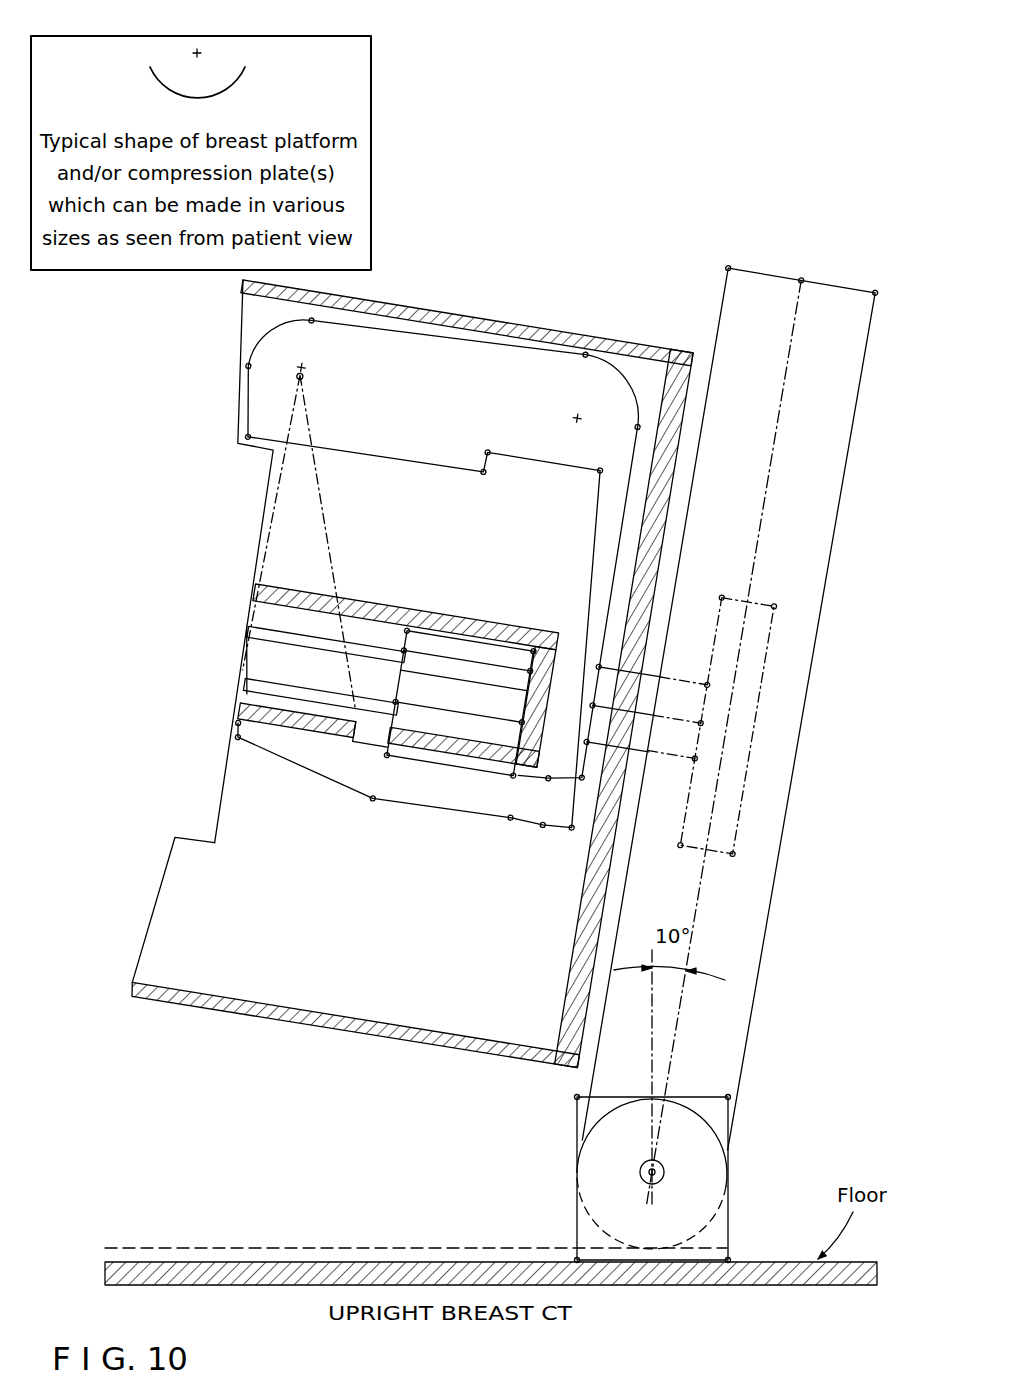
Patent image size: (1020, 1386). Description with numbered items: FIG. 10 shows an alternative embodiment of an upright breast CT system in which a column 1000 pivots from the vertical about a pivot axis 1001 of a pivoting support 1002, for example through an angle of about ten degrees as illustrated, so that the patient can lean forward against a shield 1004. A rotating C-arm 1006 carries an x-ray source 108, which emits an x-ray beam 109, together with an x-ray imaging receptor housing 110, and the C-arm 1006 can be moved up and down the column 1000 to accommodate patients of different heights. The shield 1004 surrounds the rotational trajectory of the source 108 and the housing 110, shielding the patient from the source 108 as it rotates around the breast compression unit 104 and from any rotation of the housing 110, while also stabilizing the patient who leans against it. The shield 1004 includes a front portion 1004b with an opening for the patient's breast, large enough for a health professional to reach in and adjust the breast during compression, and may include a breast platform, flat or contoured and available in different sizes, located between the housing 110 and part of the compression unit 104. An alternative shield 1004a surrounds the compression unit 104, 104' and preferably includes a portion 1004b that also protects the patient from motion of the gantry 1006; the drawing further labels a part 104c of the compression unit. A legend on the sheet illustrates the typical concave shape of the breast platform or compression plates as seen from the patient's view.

The column 1000 is at (820, 632).
The pivot axis 1001 is at (664, 1160).
The pivoting support 1002 is at (703, 1207).
The shield 1004 is at (183, 1012).
The shield 1004a is at (278, 582).
The front portion 1004b is at (172, 841).
The rotating C-arm 1006 is at (586, 540).
The x-ray source 108 is at (381, 462).
The x-ray beam 109 is at (305, 538).
The x-ray imaging receptor housing 110 is at (315, 776).
The breast compression unit 104 is at (247, 645).
The breast compression unit 104' is at (320, 696).
The compression plate holder 104c is at (453, 708).